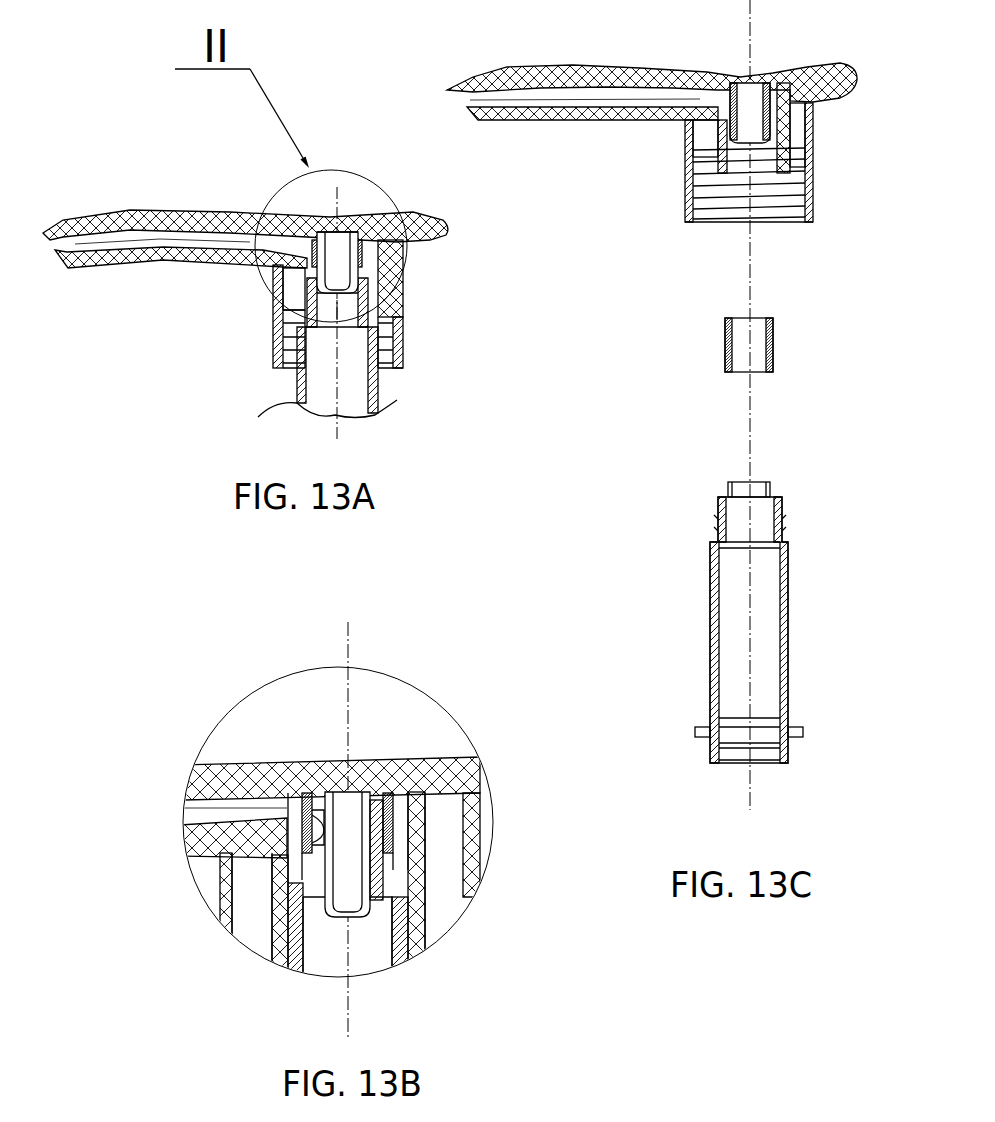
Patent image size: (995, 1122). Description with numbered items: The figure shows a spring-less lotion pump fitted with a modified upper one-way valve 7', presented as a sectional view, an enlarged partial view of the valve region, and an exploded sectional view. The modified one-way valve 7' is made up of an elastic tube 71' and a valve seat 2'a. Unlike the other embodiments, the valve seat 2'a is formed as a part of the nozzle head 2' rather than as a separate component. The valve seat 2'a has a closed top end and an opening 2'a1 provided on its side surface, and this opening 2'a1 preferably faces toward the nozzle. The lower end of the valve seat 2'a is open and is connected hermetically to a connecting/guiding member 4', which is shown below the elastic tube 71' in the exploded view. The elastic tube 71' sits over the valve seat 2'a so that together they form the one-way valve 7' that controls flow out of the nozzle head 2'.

In FIG. 13A, the modified one-way valve 7' is at (400, 271).
In FIG. 13C, the nozzle head 2' is at (660, 142).
In FIG. 13B, the valve seat 2'a is at (438, 802).
In FIG. 13B, the opening 2'a1 is at (439, 886).
In FIG. 13C, the elastic tube 71' is at (792, 336).
In FIG. 13C, the connecting/guiding member 4' is at (779, 622).